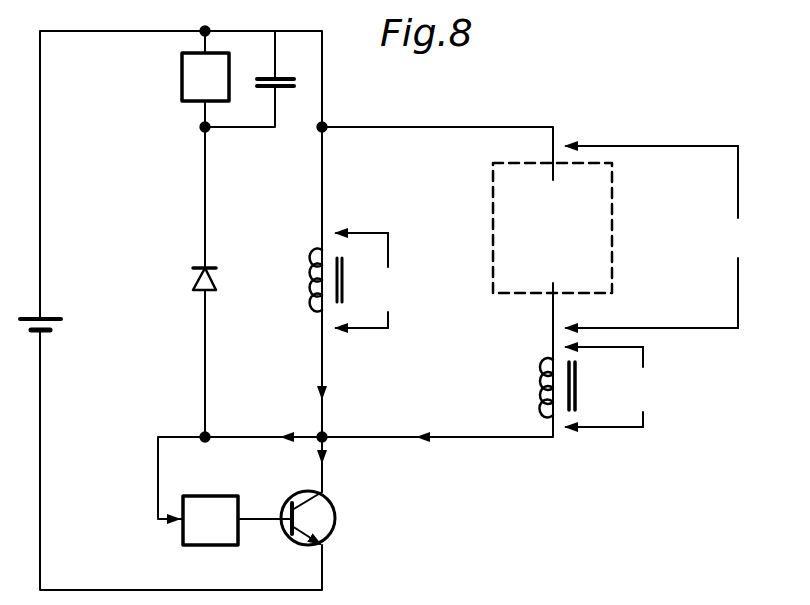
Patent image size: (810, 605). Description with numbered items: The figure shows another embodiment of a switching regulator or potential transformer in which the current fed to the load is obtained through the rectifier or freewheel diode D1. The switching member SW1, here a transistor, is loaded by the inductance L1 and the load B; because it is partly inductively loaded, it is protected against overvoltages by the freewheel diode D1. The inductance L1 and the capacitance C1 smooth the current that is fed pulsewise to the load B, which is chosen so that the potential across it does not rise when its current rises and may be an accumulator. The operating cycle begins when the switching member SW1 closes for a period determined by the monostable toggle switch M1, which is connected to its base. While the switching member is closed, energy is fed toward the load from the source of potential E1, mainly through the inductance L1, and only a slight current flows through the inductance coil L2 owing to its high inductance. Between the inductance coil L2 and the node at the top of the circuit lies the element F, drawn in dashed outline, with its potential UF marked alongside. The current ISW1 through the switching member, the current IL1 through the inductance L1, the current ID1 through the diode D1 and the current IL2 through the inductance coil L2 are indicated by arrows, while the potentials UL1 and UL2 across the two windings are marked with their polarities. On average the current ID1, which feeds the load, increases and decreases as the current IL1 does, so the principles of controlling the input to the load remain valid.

The load B is at (205, 77).
The capacitance C1 is at (267, 97).
The source of potential E1 is at (49, 315).
The freewheel diode D1 is at (191, 262).
The inductance L1 is at (312, 280).
The inductance coil L2 is at (541, 388).
The load / fuel injector F is at (552, 228).
The monostable toggle switch M1 is at (210, 520).
The switching member SW1 is at (336, 530).
The voltage across F UF is at (657, 237).
The voltage across L1 UL1 is at (376, 280).
The voltage across L2 UL2 is at (619, 387).
The current through L1 IL1 is at (345, 386).
The current through D1 ID1 is at (272, 410).
The current through L2 IL2 is at (417, 414).
The current through SW1 ISW1 is at (360, 466).